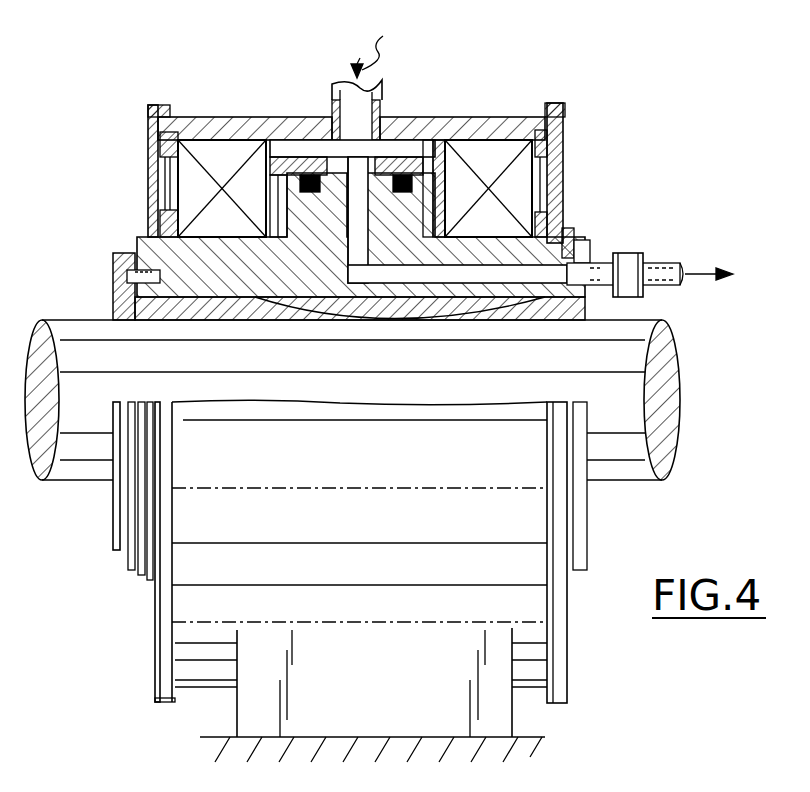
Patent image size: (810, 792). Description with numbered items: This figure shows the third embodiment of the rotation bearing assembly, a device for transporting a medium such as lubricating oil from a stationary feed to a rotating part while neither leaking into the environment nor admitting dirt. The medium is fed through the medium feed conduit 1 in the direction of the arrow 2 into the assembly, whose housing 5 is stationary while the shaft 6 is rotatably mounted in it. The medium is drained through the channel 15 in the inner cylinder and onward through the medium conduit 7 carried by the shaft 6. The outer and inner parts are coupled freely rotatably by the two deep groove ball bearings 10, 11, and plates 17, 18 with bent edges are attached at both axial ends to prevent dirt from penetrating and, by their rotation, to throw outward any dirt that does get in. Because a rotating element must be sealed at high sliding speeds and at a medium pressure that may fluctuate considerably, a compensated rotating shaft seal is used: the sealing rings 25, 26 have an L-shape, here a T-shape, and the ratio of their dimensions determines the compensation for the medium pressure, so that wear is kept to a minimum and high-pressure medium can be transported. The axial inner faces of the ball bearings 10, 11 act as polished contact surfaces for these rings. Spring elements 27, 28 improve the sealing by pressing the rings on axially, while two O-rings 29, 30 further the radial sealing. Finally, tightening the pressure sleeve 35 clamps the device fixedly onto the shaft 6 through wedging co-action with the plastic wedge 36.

The medium feed conduit 1 is at (380, 88).
The arrow 2 is at (373, 42).
The housing 5 is at (530, 632).
The shaft 6 is at (664, 362).
The medium conduit 7 is at (664, 273).
The rotation bearing 10 is at (222, 156).
The rotation bearing 11 is at (497, 158).
The channel 15 is at (528, 275).
The plate 17 is at (148, 128).
The plate 18 is at (563, 138).
The sealing ring 25 is at (290, 165).
The sealing ring 26 is at (403, 165).
The spring element 27 is at (282, 196).
The spring element 28 is at (436, 196).
The O-ring 29 is at (312, 174).
The O-ring 30 is at (404, 176).
The pressure sleeve 35 is at (112, 305).
The plastic wedge 36 is at (388, 320).